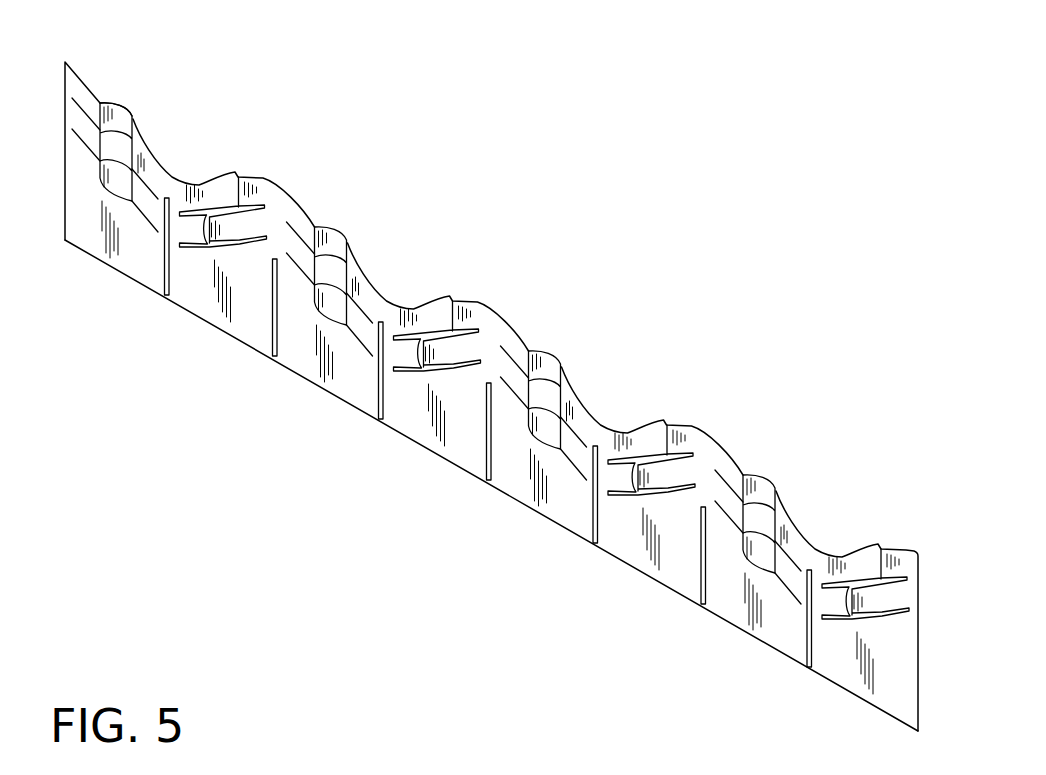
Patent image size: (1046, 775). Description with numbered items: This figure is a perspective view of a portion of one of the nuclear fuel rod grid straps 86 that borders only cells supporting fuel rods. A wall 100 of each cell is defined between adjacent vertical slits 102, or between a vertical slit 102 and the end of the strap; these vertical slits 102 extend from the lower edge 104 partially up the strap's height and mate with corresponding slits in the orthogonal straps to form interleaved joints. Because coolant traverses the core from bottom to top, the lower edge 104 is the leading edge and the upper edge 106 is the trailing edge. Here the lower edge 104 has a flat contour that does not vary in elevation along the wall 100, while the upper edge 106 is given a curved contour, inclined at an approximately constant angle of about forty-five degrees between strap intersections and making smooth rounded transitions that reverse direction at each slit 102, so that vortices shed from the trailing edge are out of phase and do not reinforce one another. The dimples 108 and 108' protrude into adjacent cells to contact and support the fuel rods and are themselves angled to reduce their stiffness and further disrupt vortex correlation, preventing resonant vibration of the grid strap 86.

The grid strap 86 is at (480, 391).
The wall 100 is at (131, 240).
The vertical slit 102 is at (165, 265).
The lower edge 104 is at (388, 427).
The upper edge 106 is at (479, 301).
The dimple 108 is at (545, 398).
The dimple 108' is at (493, 338).